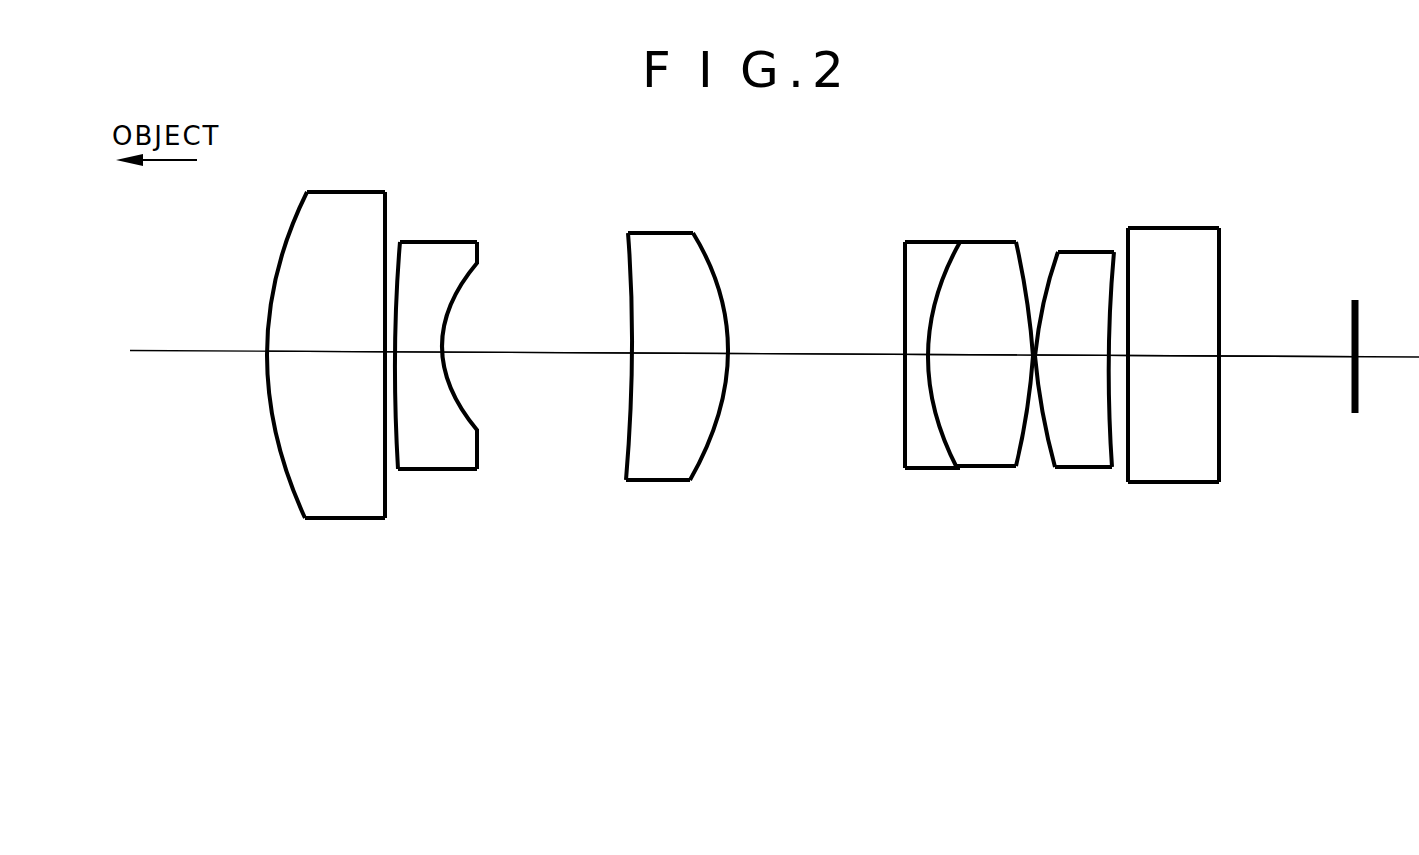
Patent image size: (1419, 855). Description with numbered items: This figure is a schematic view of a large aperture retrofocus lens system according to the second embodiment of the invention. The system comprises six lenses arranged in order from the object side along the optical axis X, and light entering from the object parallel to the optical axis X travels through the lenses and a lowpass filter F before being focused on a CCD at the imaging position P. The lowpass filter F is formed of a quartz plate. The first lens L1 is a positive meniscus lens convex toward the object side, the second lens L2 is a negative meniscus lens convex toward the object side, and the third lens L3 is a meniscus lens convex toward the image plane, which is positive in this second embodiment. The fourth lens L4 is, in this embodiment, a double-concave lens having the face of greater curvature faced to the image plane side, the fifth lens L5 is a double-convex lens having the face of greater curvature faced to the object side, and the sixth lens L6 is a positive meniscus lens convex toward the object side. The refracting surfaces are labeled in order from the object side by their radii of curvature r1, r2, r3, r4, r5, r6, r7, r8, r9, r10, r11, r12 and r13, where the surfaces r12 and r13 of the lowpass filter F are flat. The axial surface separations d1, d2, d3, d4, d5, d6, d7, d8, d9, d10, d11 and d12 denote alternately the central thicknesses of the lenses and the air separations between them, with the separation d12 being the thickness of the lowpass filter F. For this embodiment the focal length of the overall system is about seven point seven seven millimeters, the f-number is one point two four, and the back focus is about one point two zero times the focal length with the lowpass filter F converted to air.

The first lens L1 is at (311, 356).
The second lens L2 is at (472, 356).
The third lens L3 is at (661, 345).
The fourth lens L4 is at (892, 351).
The fifth lens L5 is at (995, 357).
The sixth lens L6 is at (1088, 356).
The lowpass filter F is at (1219, 357).
The imaging position P is at (1359, 356).
The optical axis X is at (1285, 356).
The radius of curvature of the first refracting surface r1 is at (292, 487).
The radius of curvature of the second refracting surface r2 is at (387, 508).
The radius of curvature of the third refracting surface r3 is at (390, 460).
The radius of curvature of the fourth refracting surface r4 is at (480, 417).
The radius of curvature of the fifth refracting surface r5 is at (625, 455).
The radius of curvature of the sixth refracting surface r6 is at (698, 462).
The radius of curvature of the seventh refracting surface r7 is at (903, 450).
The radius of curvature of the eighth refracting surface r8 is at (947, 448).
The radius of curvature of the ninth refracting surface r9 is at (1020, 457).
The radius of curvature of the tenth refracting surface r10 is at (1047, 457).
The radius of curvature of the eleventh refracting surface r11 is at (1113, 452).
The radius of curvature of the twelfth refracting surface r12 is at (1130, 452).
The radius of curvature of the thirteenth refracting surface r13 is at (1223, 462).
The first axial surface separation d1 is at (318, 352).
The second axial surface separation d2 is at (392, 352).
The third axial surface separation d3 is at (417, 353).
The fourth axial surface separation d4 is at (533, 353).
The fifth axial surface separation d5 is at (672, 353).
The sixth axial surface separation d6 is at (798, 354).
The seventh axial surface separation d7 is at (918, 354).
The eighth axial surface separation d8 is at (972, 354).
The ninth axial surface separation d9 is at (1038, 312).
The tenth axial surface separation d10 is at (1067, 355).
The eleventh axial surface separation d11 is at (1117, 355).
The twelfth axial surface separation d12 is at (1173, 356).